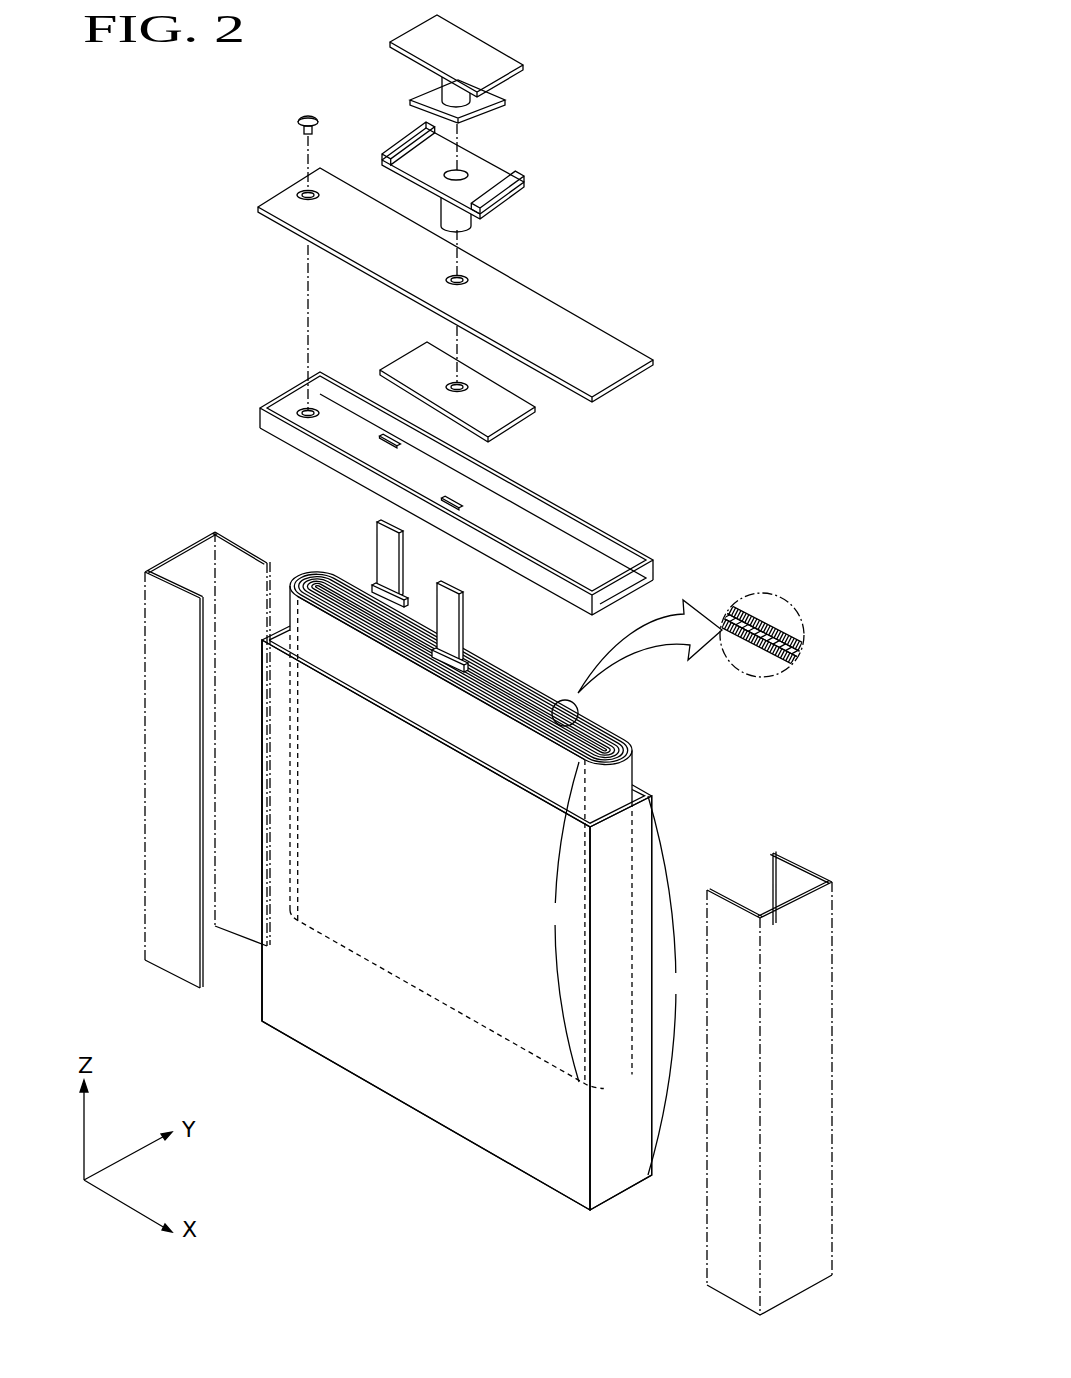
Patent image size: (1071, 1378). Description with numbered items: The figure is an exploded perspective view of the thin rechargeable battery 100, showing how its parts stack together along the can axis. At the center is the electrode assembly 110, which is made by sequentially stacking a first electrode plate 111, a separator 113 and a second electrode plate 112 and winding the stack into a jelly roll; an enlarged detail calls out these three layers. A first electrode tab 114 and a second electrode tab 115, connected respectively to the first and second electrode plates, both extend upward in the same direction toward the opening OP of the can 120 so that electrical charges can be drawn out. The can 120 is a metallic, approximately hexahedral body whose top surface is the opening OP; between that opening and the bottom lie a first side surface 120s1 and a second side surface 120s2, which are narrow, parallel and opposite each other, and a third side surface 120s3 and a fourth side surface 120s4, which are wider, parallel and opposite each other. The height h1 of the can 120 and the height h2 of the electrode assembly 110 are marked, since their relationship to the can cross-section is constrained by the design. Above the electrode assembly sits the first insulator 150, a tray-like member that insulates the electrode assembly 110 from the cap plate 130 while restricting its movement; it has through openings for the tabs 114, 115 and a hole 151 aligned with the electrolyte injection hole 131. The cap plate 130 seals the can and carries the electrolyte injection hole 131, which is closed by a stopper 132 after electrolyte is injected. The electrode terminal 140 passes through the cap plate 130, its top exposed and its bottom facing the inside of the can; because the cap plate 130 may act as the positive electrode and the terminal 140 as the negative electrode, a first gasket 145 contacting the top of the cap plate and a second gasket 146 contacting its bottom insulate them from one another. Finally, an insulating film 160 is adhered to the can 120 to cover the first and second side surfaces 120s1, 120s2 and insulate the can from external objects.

The rechargeable battery 100 is at (712, 95).
The electrode assembly 110 is at (630, 736).
The first electrode plate 111 is at (795, 662).
The second electrode plate 112 is at (805, 645).
The separator 113 is at (799, 653).
The first electrode tab 114 is at (460, 628).
The second electrode tab 115 is at (383, 550).
The can 120 is at (495, 1160).
The first side surface 120s1 is at (260, 985).
The second side surface 120s2 is at (620, 1178).
The third side surface 120s3 is at (436, 1106).
The fourth side surface 120s4 is at (640, 790).
The cap plate 130 is at (613, 342).
The electrolyte injection hole 131 is at (303, 192).
The stopper 132 is at (305, 117).
The electrode terminal 140 is at (498, 62).
The first gasket 145 is at (522, 187).
The second gasket 146 is at (407, 362).
The first insulator 150 is at (648, 571).
The hole 151 is at (307, 405).
The insulating film 160 is at (158, 855).
The opening OP is at (283, 622).
The height of the can h1 is at (670, 985).
The height of the electrode assembly h2 is at (560, 922).